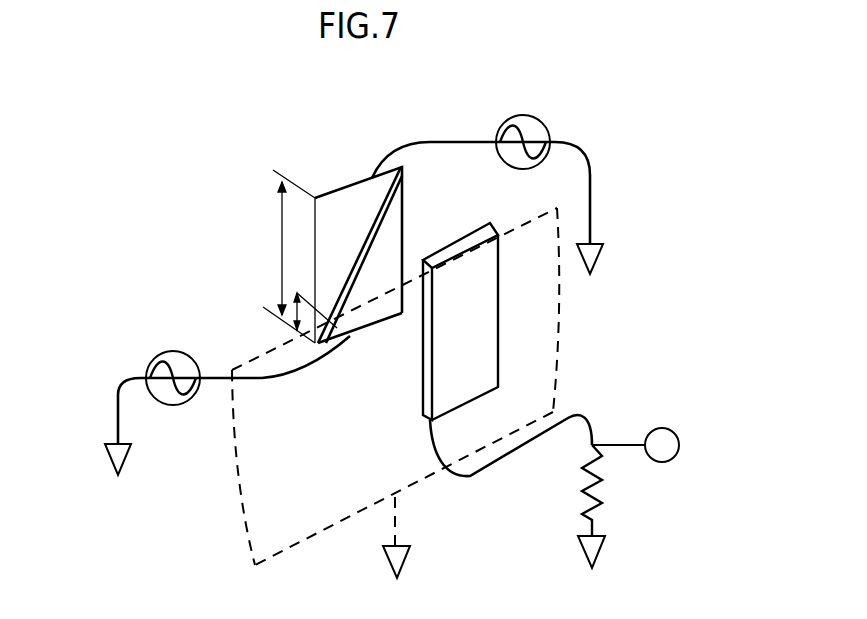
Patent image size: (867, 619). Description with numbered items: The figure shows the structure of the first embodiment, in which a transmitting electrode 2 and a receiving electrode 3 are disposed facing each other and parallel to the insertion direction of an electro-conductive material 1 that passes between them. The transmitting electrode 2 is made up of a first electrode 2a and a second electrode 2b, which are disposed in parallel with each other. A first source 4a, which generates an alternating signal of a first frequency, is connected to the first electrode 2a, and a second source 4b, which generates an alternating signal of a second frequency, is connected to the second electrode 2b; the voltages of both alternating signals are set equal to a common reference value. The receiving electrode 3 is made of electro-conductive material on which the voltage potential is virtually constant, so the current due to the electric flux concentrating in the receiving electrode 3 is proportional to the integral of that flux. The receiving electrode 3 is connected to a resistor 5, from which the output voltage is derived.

The electro-conductive material 1 is at (237, 477).
The transmitting electrode 2 is at (328, 257).
The first electrode 2a is at (345, 187).
The second electrode 2b is at (377, 323).
The receiving electrode 3 is at (498, 343).
The first source 4a is at (542, 120).
The second source 4b is at (172, 350).
The resistor 5 is at (598, 485).